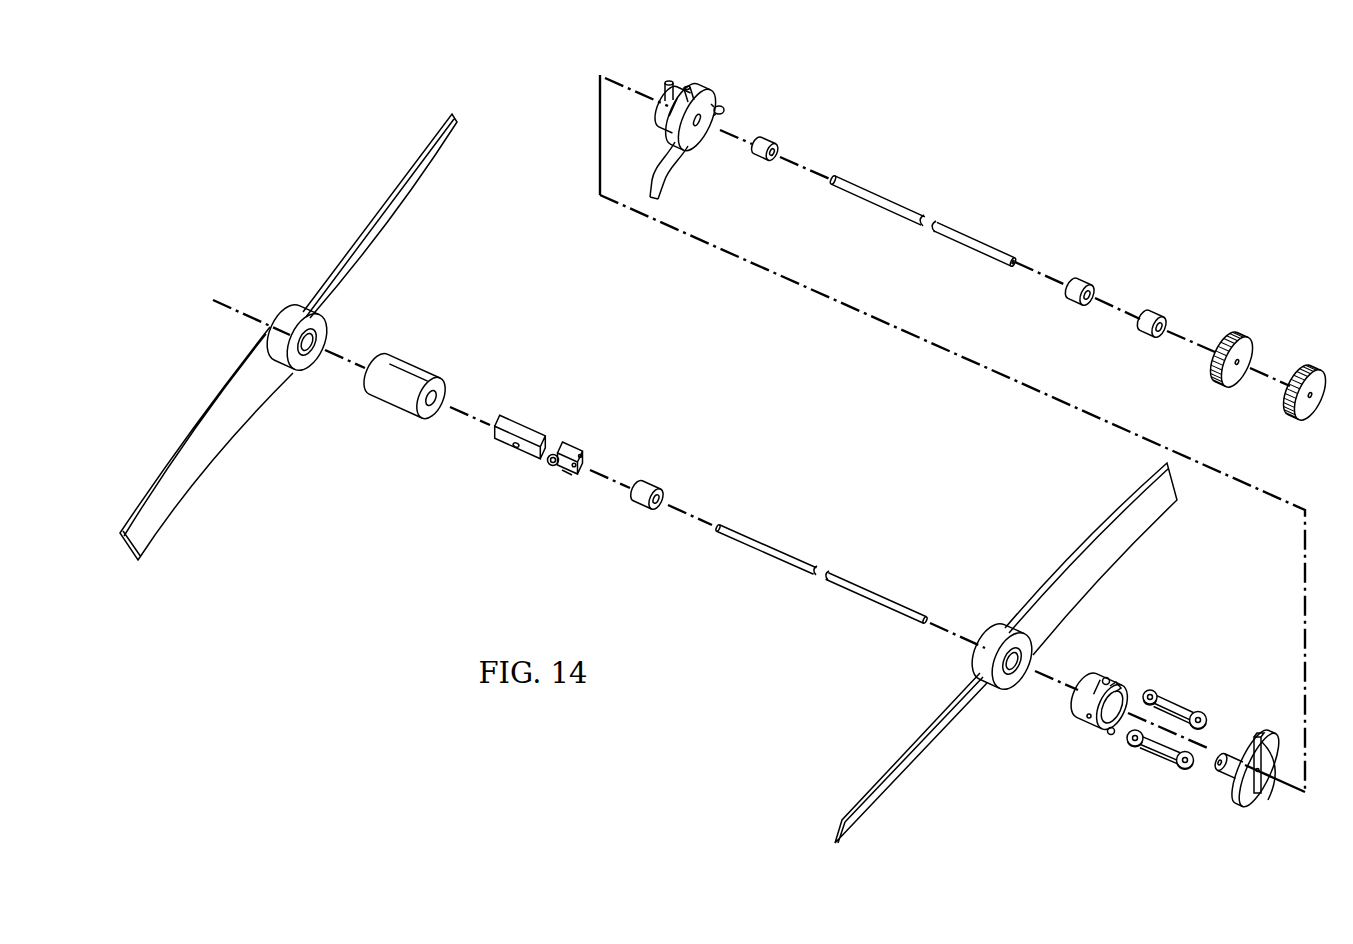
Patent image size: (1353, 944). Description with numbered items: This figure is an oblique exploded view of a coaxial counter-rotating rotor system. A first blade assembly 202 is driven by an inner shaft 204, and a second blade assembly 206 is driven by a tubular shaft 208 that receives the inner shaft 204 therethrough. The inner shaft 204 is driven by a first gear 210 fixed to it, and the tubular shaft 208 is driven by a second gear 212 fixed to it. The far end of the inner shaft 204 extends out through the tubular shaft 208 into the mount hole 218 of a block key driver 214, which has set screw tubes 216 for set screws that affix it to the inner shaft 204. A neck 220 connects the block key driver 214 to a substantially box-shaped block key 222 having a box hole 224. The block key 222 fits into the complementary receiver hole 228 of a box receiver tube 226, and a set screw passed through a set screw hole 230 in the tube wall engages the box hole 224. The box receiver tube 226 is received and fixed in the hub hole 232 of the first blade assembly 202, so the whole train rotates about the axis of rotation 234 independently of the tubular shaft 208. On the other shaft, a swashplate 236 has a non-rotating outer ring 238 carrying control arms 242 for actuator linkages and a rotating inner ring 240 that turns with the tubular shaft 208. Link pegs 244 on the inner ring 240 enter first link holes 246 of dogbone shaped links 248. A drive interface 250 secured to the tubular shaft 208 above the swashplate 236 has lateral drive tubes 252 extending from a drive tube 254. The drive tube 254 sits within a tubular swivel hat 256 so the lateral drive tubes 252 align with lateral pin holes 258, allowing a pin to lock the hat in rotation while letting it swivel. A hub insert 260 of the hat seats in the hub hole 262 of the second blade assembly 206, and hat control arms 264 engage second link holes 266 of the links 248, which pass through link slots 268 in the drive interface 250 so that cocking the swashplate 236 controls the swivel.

The first blade assembly 202 is at (305, 312).
The inner shaft 204 is at (893, 604).
The second blade assembly 206 is at (1000, 635).
The tubular shaft 208 is at (965, 233).
The first gear 210 is at (1302, 424).
The second gear 212 is at (1228, 392).
The block key driver 214 is at (580, 464).
The set screw tubes 216 is at (585, 456).
The mount hole 218 is at (574, 477).
The neck 220 is at (555, 455).
The block key 222 is at (521, 435).
The box hole 224 is at (516, 448).
The box receiver tube 226 is at (409, 391).
The receiver hole 228 is at (432, 405).
The set screw hole 230 is at (400, 406).
The hub hole 232 is at (309, 352).
The axis of rotation 234 is at (213, 303).
The swashplate 236 is at (668, 135).
The non-rotating outer ring 238 is at (704, 136).
The rotating inner ring 240 is at (664, 125).
The control arms 242 is at (690, 88).
The link pegs 244 is at (660, 96).
The first link hole 246 is at (1175, 708).
The link 248 is at (1197, 711).
The drive interface 250 is at (1288, 757).
The lateral drive tubes 252 is at (1226, 752).
The drive tube 254 is at (1262, 740).
The tubular swivel hat 256 is at (1116, 683).
The lateral pin holes 258 is at (1088, 717).
The hub insert 260 is at (1099, 699).
The hub hole 262 is at (1013, 688).
The hat control arms 264 is at (1105, 678).
The second link holes 266 is at (1179, 737).
The link slots 268 is at (1262, 758).